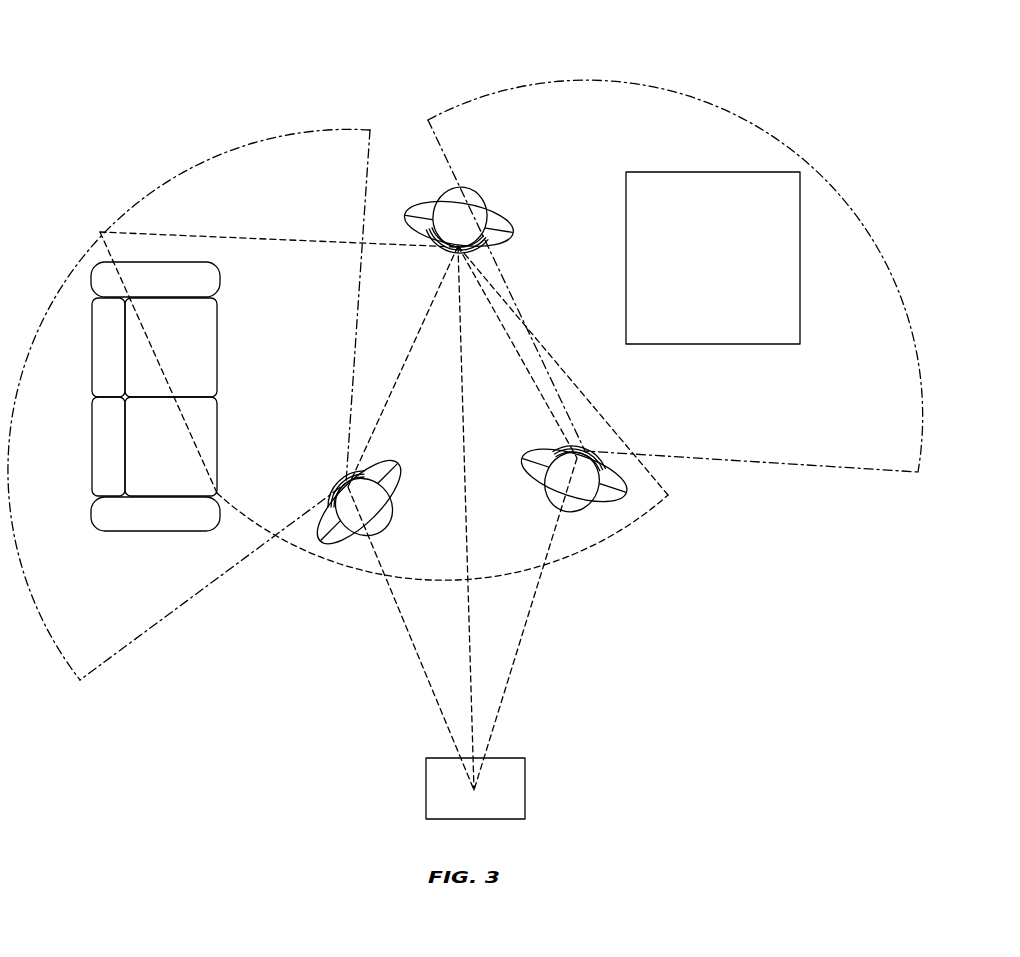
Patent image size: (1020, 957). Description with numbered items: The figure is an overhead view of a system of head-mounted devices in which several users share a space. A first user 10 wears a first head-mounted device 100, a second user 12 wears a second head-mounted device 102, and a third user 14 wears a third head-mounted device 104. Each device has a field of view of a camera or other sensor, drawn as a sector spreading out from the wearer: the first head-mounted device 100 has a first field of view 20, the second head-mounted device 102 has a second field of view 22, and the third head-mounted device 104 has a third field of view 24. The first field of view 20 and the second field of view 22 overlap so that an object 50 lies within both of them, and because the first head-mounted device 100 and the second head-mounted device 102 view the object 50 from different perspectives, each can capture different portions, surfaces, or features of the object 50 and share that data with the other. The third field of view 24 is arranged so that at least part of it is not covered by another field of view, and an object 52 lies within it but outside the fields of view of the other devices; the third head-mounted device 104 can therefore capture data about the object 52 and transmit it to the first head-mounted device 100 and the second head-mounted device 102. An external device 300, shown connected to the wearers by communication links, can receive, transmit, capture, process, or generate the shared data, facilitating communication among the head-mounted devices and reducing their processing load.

The first user 10 is at (466, 188).
The second user 12 is at (395, 508).
The third user 14 is at (572, 512).
The first field of view 20 is at (360, 574).
The second field of view 22 is at (212, 152).
The third field of view 24 is at (650, 89).
The object 50 is at (210, 422).
The object 52 is at (626, 186).
The first head-mounted device 100 is at (452, 252).
The second head-mounted device 102 is at (333, 488).
The third head-mounted device 104 is at (592, 446).
The external device 300 is at (525, 790).